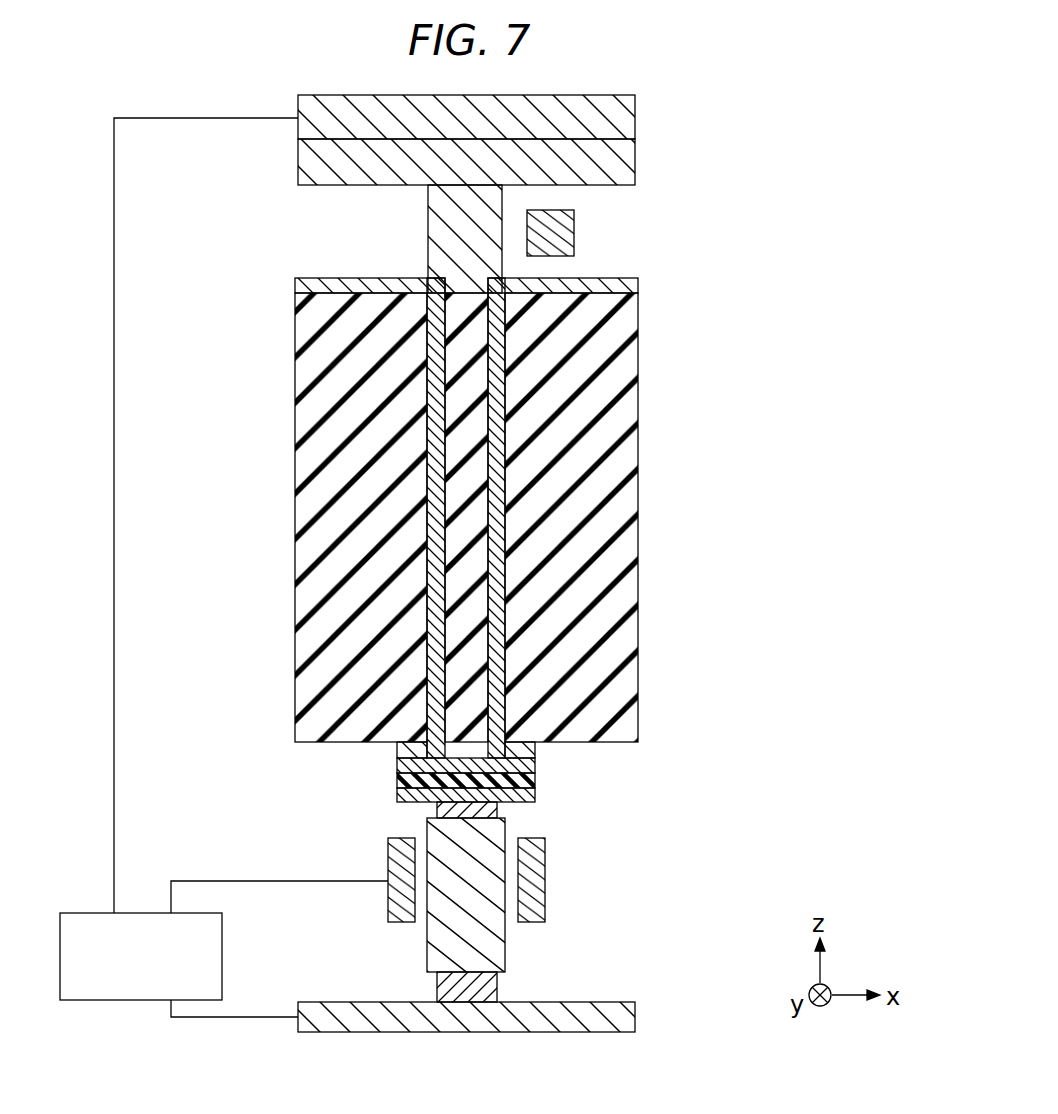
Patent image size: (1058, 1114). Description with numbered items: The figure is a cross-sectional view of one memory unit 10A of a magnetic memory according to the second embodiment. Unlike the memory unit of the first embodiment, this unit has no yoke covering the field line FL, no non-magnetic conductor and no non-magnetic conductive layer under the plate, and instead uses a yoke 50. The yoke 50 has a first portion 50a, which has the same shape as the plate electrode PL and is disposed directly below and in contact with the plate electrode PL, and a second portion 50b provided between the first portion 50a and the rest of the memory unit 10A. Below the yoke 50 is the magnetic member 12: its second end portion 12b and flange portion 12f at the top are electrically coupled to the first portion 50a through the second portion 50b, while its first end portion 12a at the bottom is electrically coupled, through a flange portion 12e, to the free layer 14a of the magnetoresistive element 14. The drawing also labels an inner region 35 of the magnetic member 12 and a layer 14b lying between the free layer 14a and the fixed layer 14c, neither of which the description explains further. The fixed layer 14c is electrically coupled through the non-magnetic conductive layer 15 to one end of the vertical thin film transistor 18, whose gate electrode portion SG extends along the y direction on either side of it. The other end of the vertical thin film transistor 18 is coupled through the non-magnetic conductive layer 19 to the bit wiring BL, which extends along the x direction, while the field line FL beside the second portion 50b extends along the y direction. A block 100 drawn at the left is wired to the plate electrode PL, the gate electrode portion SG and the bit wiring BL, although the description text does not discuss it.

The control circuit 100 is at (75, 910).
The plate electrode PL is at (636, 117).
The yoke 50 is at (397, 216).
The first portion 50a is at (298, 163).
The second portion 50b is at (437, 207).
The field line FL is at (575, 232).
The memory unit 10A is at (848, 248).
The magnetic member 12 is at (502, 519).
The flange portion 12f is at (637, 289).
The second end portion 12b is at (495, 297).
The first end portion 12a is at (515, 722).
The core 35 is at (455, 452).
The flange portion 12e is at (537, 752).
The magnetoresistive element 14 is at (373, 805).
The free layer 14a is at (398, 765).
The second layer 14b is at (398, 780).
The fixed layer 14c is at (398, 795).
The non-magnetic conductive layer 15 is at (497, 810).
The gate electrode portion SG is at (545, 878).
The vertical thin film transistor 18 is at (486, 948).
The non-magnetic conductive layer 19 is at (497, 990).
The bit wiring BL is at (636, 1018).